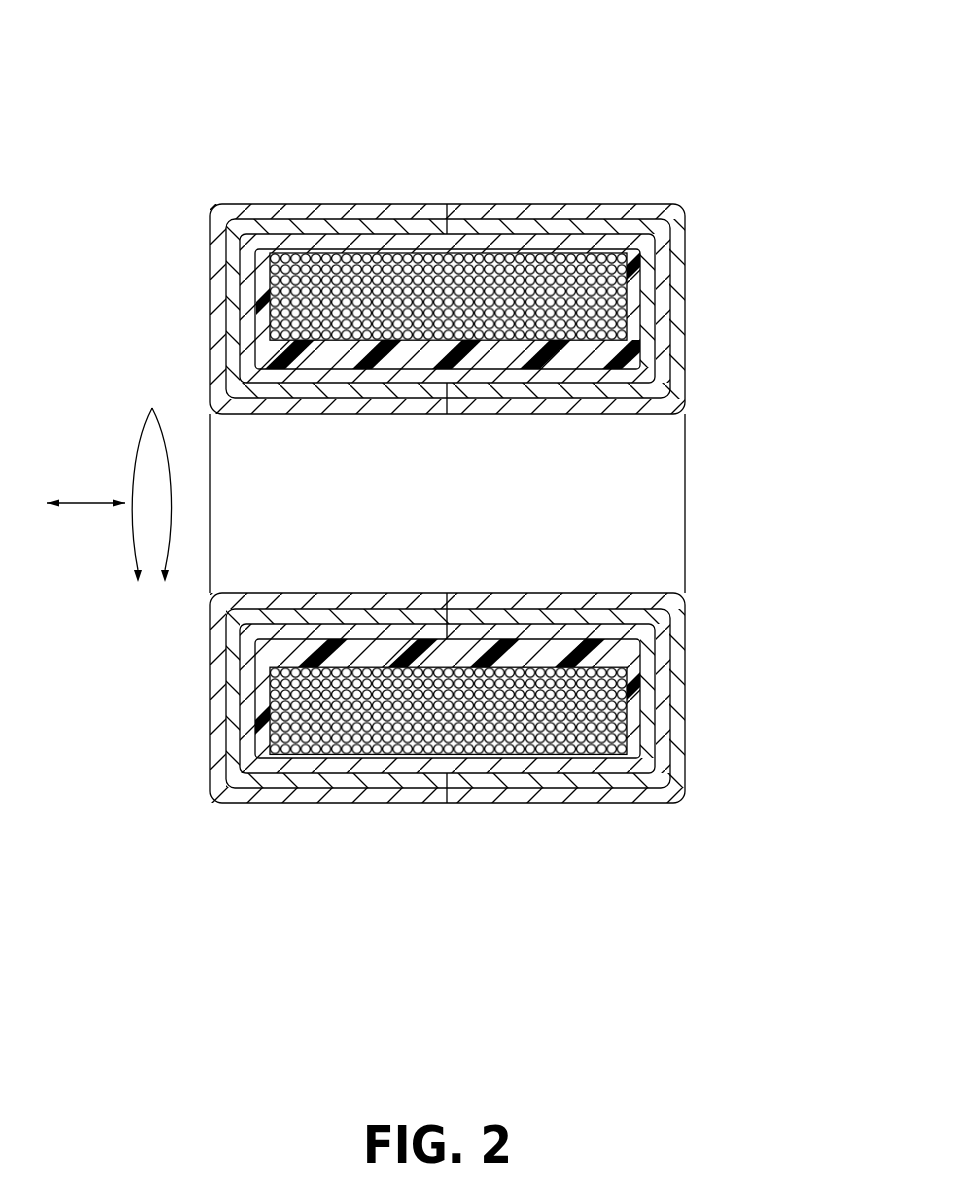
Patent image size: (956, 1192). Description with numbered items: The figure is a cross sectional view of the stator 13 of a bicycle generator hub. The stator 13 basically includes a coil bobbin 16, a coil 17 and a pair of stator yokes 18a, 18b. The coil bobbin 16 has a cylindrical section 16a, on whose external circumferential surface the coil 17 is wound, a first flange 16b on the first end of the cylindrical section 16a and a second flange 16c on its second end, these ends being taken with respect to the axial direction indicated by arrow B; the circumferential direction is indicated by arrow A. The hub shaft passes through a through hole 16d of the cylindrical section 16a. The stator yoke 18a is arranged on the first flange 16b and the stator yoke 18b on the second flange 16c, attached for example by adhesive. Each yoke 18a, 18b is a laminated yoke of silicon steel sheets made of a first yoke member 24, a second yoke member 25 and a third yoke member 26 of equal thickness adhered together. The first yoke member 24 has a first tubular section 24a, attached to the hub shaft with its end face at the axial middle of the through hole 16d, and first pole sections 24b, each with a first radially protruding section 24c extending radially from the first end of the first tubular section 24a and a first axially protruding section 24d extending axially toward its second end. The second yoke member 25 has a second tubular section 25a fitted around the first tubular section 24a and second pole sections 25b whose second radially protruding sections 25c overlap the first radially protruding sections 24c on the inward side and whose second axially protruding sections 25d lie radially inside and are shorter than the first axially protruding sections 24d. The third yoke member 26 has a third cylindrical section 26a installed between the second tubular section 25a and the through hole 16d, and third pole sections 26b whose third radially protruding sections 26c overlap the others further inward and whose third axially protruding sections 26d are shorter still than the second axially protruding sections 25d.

The stator 13 is at (338, 147).
The coil bobbin 16 is at (447, 231).
The cylindrical section 16a is at (423, 247).
The first flange 16b is at (270, 283).
The second flange 16c is at (635, 278).
The through hole 16d is at (600, 368).
The coil 17 is at (386, 345).
The stator yoke 18a is at (213, 200).
The stator yoke 18b is at (700, 220).
The first yoke member 24 is at (357, 812).
The first tubular section 24a is at (407, 403).
The first pole sections 24b is at (203, 705).
The first radially protruding section 24c is at (217, 717).
The first axially protruding section 24d is at (333, 803).
The second yoke member 25 is at (400, 795).
The second tubular section 25a is at (357, 393).
The second pole sections 25b is at (233, 670).
The second radially protruding section 25c is at (232, 737).
The second axially protruding section 25d is at (302, 803).
The third yoke member 26 is at (428, 770).
The third cylindrical section 26a is at (286, 378).
The third pole sections 26b is at (232, 640).
The third radially protruding section 26c is at (237, 740).
The third axially protruding section 26d is at (280, 803).
The arrow A is at (151, 473).
The arrow B is at (86, 483).